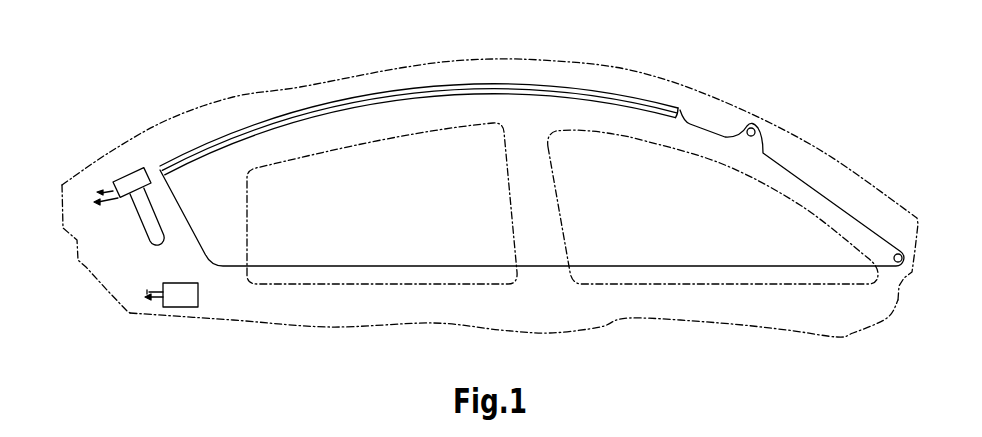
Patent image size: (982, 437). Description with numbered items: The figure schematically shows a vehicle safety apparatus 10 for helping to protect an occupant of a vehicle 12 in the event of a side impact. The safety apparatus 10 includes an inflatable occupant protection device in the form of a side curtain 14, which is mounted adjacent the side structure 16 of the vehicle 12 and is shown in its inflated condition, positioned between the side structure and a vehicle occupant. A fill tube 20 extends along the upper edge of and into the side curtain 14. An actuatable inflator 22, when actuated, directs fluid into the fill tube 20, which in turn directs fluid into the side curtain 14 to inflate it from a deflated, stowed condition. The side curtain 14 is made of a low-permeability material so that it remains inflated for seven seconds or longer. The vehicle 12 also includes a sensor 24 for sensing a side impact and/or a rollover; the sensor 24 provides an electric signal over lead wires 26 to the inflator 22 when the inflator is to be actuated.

The vehicle safety apparatus 10 is at (190, 98).
The vehicle 12 is at (813, 123).
The side curtain 14 is at (385, 266).
The side structure 16 is at (735, 103).
The fill tube 20 is at (549, 88).
The inflator 22 is at (134, 229).
The sensor 24 is at (182, 295).
The lead wires 26 is at (112, 190).